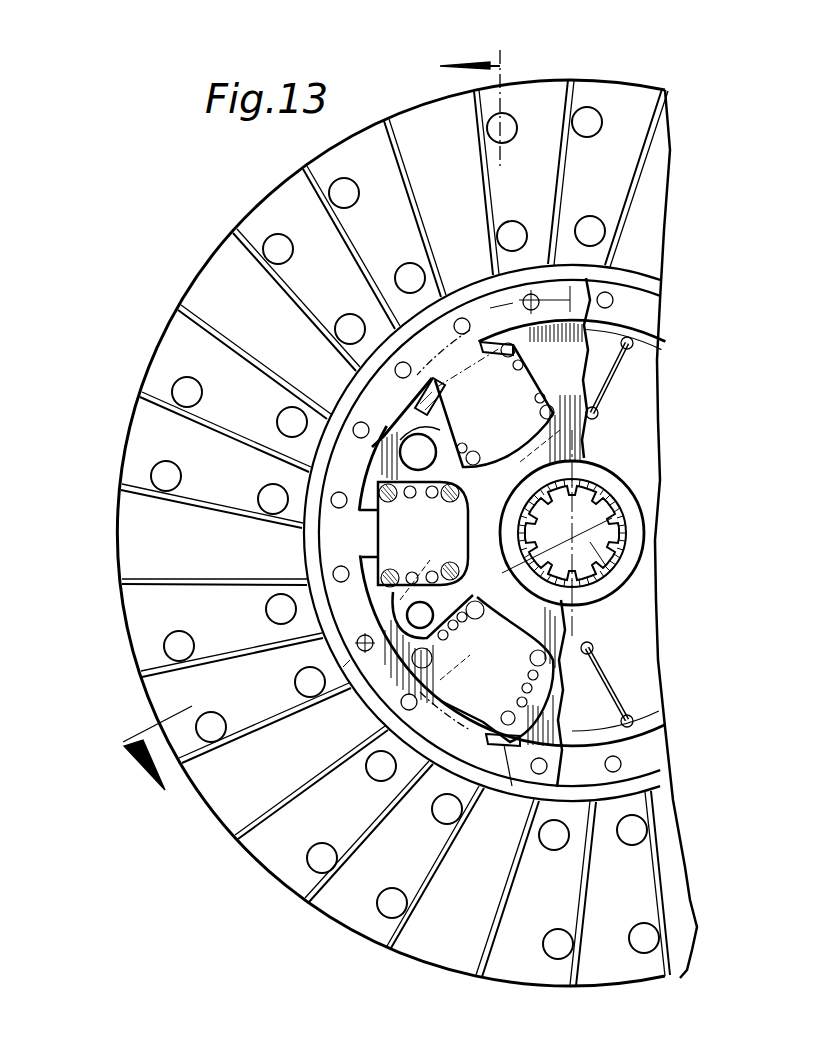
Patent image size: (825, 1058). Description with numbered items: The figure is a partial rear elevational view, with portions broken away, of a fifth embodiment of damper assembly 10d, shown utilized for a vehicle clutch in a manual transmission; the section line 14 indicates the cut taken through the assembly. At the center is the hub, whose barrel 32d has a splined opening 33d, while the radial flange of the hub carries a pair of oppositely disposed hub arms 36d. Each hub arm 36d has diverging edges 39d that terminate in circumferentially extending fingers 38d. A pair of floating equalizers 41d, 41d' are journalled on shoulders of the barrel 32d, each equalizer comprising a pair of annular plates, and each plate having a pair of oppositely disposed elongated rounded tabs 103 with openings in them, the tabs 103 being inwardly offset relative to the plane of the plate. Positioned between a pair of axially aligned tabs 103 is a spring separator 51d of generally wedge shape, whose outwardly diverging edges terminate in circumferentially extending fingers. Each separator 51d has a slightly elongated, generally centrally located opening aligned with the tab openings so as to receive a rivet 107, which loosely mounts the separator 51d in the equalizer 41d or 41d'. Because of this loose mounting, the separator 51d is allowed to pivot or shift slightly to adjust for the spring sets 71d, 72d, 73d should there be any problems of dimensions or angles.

The damper assembly 10d is at (695, 320).
The section line 14 is at (548, 75).
The barrel 32d is at (612, 518).
The splined opening 33d is at (632, 557).
The hub arms 36d is at (592, 370).
The circumferentially extending fingers 38d is at (488, 340).
The diverging edges 39d is at (537, 367).
The floating equalizer 41d is at (413, 481).
The floating equalizer 41d' is at (469, 534).
The spring separator 51d is at (390, 527).
The spring set 71d is at (437, 397).
The spring set 72d is at (500, 711).
The spring set 73d is at (419, 535).
The elongated rounded tabs 103 is at (432, 404).
The rivet 107 is at (392, 433).